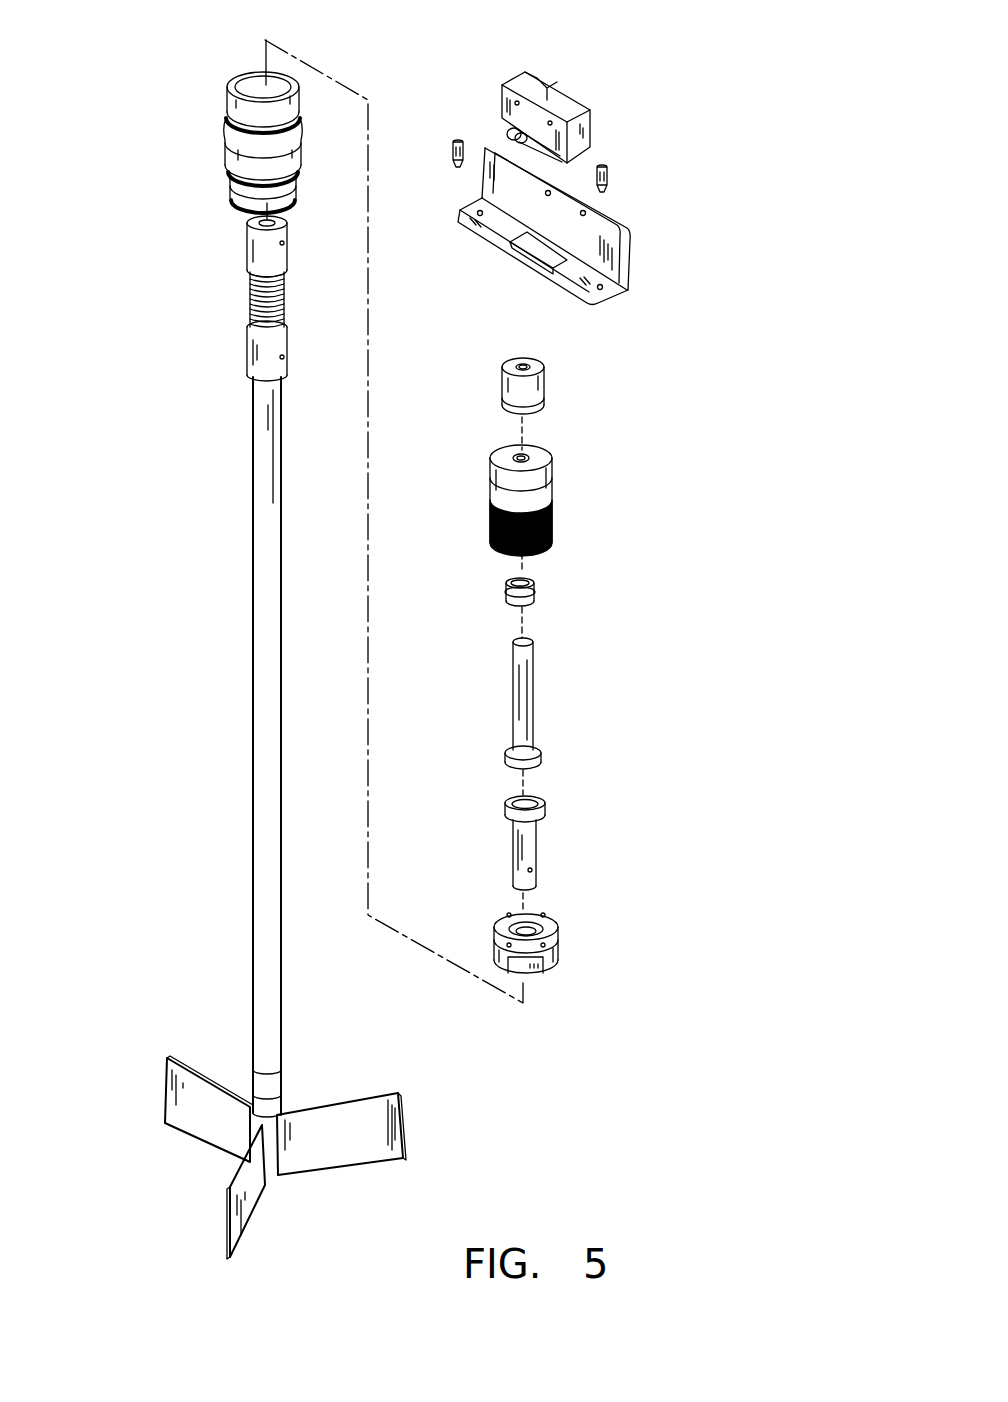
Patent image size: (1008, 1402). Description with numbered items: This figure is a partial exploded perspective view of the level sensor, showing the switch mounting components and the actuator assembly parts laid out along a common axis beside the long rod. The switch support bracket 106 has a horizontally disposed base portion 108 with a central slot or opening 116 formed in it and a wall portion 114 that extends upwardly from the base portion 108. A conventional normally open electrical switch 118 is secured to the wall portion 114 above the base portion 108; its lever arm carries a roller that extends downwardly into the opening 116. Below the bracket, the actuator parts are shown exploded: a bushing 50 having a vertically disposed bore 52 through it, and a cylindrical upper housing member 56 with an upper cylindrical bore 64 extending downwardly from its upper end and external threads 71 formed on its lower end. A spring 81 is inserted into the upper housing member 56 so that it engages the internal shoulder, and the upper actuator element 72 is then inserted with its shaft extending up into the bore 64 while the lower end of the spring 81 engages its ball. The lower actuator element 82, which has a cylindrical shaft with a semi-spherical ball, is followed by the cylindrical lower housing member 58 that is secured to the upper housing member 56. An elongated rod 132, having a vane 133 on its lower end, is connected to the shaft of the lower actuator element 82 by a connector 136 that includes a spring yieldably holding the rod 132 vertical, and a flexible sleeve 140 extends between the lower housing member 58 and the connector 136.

The flexible sleeve 140 is at (232, 157).
The connector 136 is at (250, 262).
The elongated rod 132 is at (257, 712).
The vane 133 is at (407, 1138).
The electrical switch 118 is at (593, 103).
The wall portion 114 is at (600, 227).
The switch support bracket 106 is at (594, 242).
The central slot or opening 116 is at (530, 250).
The base portion 108 is at (582, 269).
The bore 52 is at (532, 365).
The bushing 50 is at (589, 391).
The upper cylindrical bore 64 is at (530, 458).
The upper housing member 56 is at (536, 498).
The external threads 71 is at (553, 528).
The spring 81 is at (535, 588).
The upper actuator element 72 is at (547, 702).
The lower actuator element 82 is at (545, 850).
The lower housing member 58 is at (565, 947).